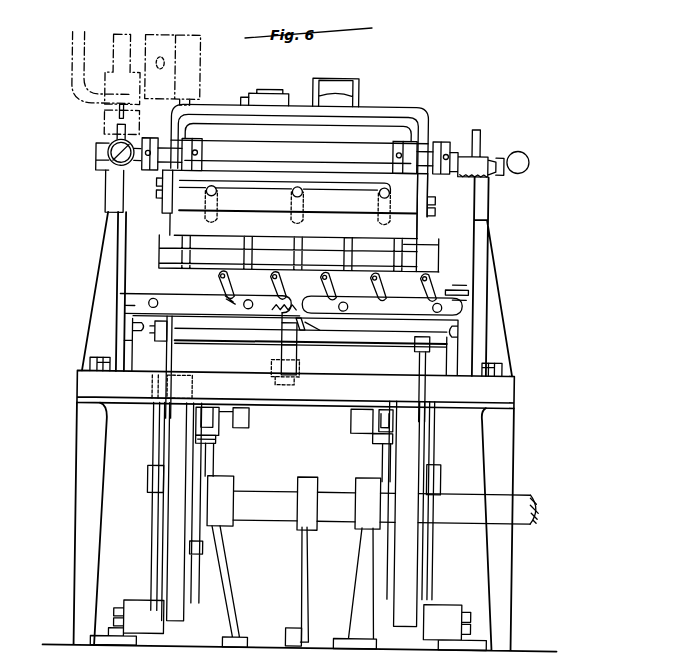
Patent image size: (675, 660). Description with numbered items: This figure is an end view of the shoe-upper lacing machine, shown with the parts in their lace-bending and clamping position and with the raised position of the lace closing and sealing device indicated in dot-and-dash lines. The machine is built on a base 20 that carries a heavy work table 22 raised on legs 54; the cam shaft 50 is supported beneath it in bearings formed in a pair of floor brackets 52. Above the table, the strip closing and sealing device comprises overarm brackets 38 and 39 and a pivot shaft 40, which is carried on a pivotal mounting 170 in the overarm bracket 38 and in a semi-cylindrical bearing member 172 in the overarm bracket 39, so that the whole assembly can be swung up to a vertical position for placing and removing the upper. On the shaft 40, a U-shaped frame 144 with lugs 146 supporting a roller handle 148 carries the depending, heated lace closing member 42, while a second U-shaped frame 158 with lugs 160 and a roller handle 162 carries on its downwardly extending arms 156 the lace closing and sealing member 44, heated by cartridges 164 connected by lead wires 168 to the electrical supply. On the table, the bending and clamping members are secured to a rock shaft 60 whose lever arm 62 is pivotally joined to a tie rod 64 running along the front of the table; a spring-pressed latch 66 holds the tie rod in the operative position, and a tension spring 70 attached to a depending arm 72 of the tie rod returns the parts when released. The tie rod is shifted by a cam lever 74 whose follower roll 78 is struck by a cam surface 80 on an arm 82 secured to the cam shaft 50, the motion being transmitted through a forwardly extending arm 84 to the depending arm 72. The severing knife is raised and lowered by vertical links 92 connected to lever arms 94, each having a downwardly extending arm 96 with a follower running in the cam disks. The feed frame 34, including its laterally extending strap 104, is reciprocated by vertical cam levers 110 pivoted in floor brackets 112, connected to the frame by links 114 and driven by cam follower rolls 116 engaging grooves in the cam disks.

The base 20 is at (77, 385).
The work table 22 is at (123, 304).
The feed frame 34 is at (160, 338).
The overarm bracket 38 is at (97, 277).
The overarm bracket 39 is at (488, 267).
The pivot shaft 40 is at (118, 37).
The lace closing member 42 is at (418, 249).
The lace closing and sealing member 44 is at (175, 32).
The cam shaft 50 is at (528, 497).
The floor brackets 52 is at (228, 557).
The legs 54 is at (125, 340).
The rock shaft 60 is at (220, 281).
The lever arm 62 is at (226, 291).
The tie rod 64 is at (242, 301).
The spring-pressed latch 66 is at (470, 291).
The tension spring 70 is at (276, 314).
The depending arm 72 is at (301, 331).
The cam lever 74 is at (275, 369).
The follower roll 78 is at (292, 381).
The cam surface 80 is at (290, 633).
The arm 82 is at (302, 583).
The forwardly extending arm 84 is at (285, 334).
The vertical links 92 is at (218, 421).
The lever arms 94 is at (205, 444).
The downwardly extending arm 96 is at (240, 471).
The laterally extending strap 104 is at (380, 336).
The cam levers 110 is at (156, 430).
The floor brackets 112 is at (140, 607).
The links 114 is at (182, 341).
The cam follower rolls 116 is at (148, 483).
The U-shaped frame 144 is at (72, 58).
The lugs 146 is at (356, 100).
The roller handle 148 is at (340, 82).
The downwardly extending arms 156 is at (163, 208).
The U-shaped frame 158 is at (432, 141).
The lugs 160 is at (244, 99).
The roller handle 162 is at (268, 90).
The heating cartridges 164 is at (218, 200).
The lead wires 168 is at (226, 186).
The pivotal mounting 170 is at (112, 148).
The semi-cylindrical bearing member 172 is at (482, 162).